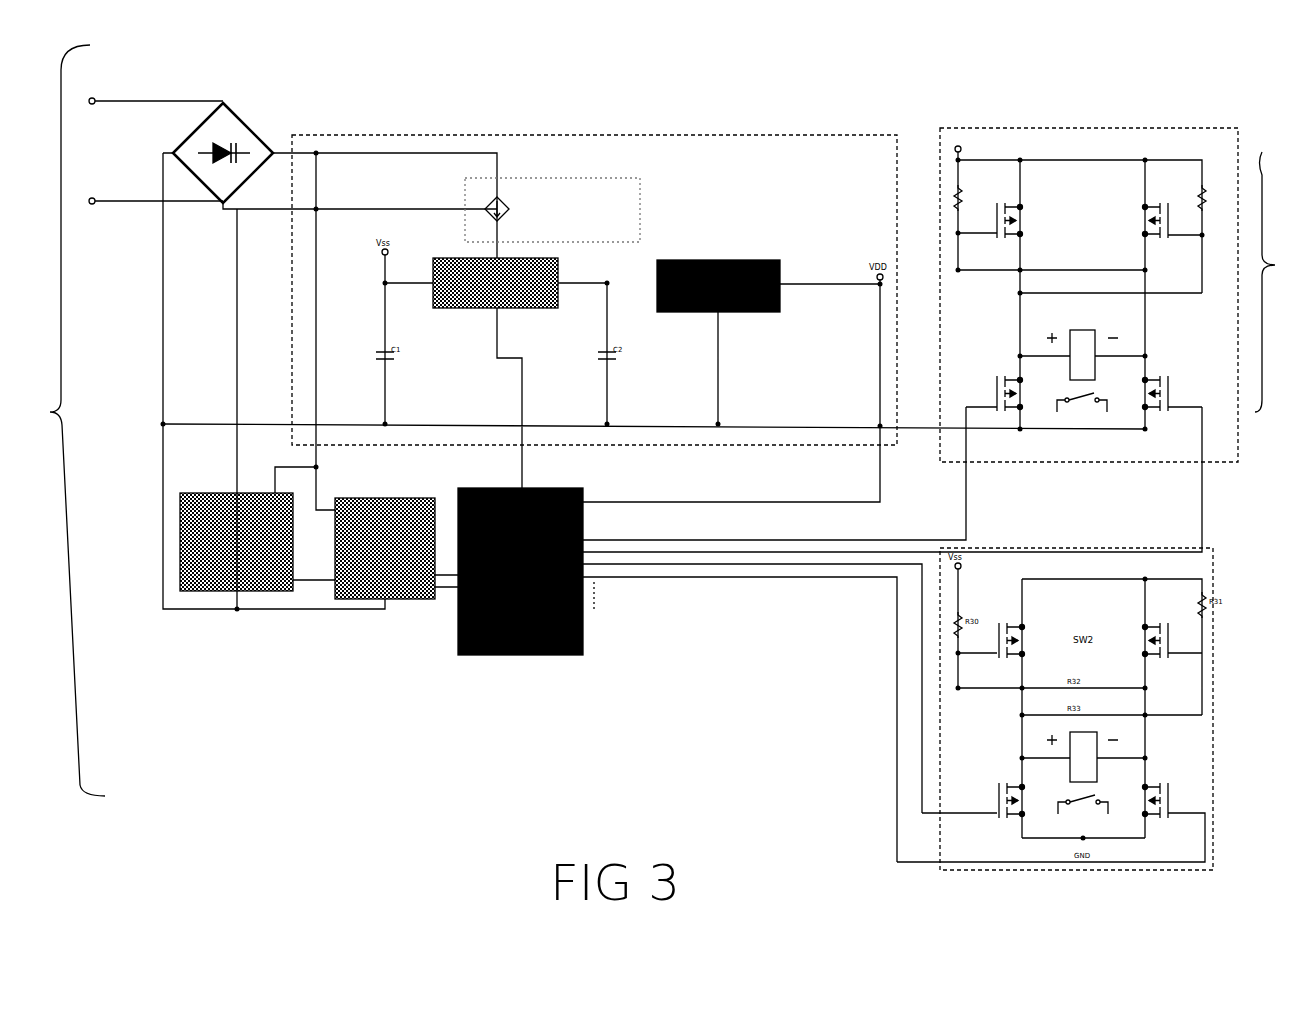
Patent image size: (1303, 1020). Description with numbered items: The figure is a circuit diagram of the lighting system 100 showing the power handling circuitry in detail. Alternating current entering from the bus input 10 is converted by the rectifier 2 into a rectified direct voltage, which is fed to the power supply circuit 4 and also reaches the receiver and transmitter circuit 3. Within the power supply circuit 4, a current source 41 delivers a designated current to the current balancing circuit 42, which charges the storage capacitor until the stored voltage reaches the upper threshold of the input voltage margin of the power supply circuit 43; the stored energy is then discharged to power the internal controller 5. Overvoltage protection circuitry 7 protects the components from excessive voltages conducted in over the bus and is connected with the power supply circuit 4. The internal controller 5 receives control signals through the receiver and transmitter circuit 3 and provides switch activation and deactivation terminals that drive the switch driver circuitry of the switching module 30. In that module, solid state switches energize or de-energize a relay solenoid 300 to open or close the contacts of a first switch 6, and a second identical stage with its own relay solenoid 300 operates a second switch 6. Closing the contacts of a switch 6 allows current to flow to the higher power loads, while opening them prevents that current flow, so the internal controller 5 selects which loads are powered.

The lighting system 100 is at (61, 420).
The AC input terminals 10 is at (120, 102).
The rectifier 2 is at (229, 102).
The power supply circuit 4 is at (747, 199).
The current source 41 is at (552, 210).
The current balancing circuit 42 is at (452, 309).
The power supply circuit 43 is at (665, 312).
The overvoltage protection circuitry 7 is at (205, 493).
The receiver and transmitter circuit 3 is at (403, 498).
The internal controller 5 is at (552, 488).
The switching module 30 is at (1120, 295).
The relay solenoid 300 is at (1095, 331).
The switch 6 is at (1090, 437).